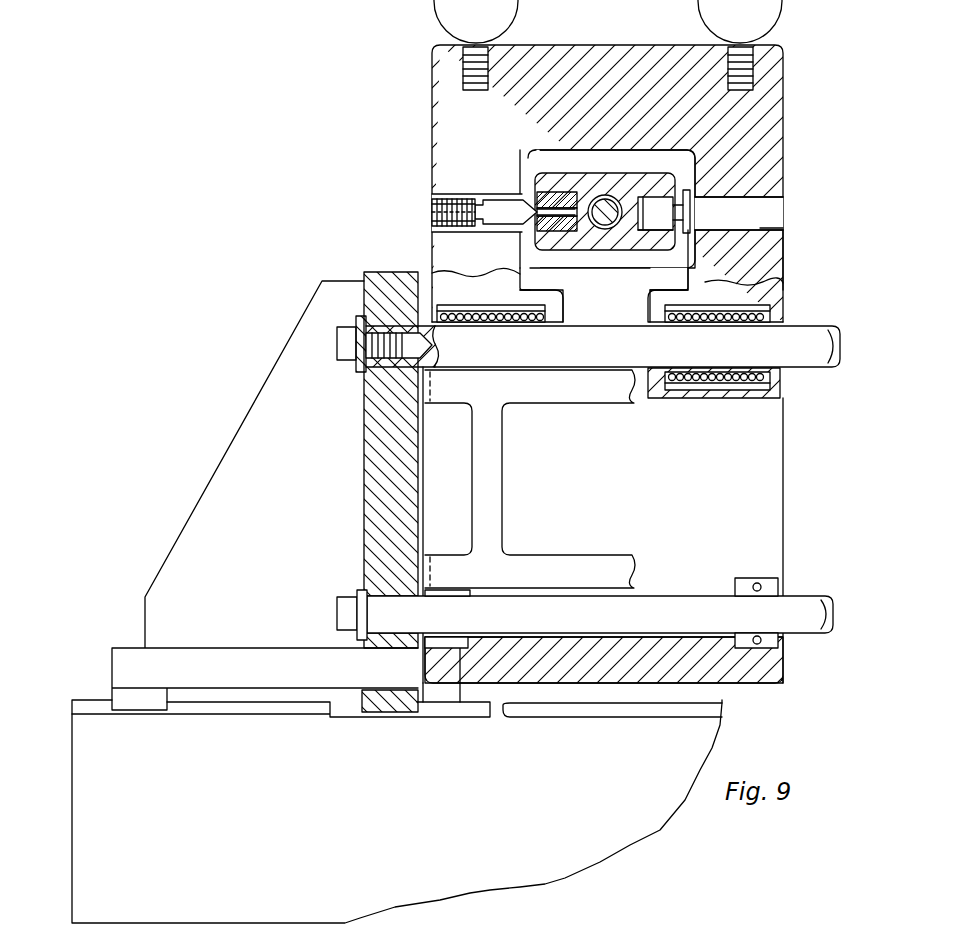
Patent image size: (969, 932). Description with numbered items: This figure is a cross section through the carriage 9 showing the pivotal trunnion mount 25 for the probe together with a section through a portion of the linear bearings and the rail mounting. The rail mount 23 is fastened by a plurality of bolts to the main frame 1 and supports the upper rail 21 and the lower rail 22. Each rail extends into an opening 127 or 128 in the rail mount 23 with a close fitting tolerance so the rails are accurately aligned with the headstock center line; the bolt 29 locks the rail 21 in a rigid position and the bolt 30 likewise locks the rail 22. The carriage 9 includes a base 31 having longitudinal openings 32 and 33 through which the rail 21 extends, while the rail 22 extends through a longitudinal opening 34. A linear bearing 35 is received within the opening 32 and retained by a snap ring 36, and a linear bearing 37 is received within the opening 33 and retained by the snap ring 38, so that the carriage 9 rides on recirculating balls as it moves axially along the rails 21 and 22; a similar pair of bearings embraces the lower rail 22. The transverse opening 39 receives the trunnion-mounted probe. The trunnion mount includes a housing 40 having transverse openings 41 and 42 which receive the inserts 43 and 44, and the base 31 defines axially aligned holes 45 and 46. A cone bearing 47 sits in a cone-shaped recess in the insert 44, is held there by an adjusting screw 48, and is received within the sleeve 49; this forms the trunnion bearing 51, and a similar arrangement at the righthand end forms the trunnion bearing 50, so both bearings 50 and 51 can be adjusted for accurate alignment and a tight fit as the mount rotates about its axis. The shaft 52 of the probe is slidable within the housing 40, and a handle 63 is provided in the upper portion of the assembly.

The main frame 1 is at (72, 774).
The carriage 9 is at (786, 85).
The upper rail 21 is at (808, 332).
The lower rail 22 is at (805, 598).
The rail mount 23 is at (268, 380).
The trunnion mount 25 is at (650, 173).
The bolt 29 is at (346, 360).
The bolt 30 is at (344, 597).
The base 31 is at (776, 248).
The longitudinal opening 32 is at (540, 322).
The longitudinal opening 33 is at (705, 347).
The longitudinal opening 34 is at (588, 589).
The linear bearing 35 is at (530, 292).
The snap ring 36 is at (497, 300).
The linear bearing 37 is at (688, 292).
The snap ring 38 is at (783, 298).
The transverse opening 39 is at (580, 150).
The housing 40 is at (690, 183).
The transverse opening 41 is at (660, 197).
The transverse opening 42 is at (547, 192).
The insert 43 is at (640, 232).
The insert 44 is at (563, 231).
The hole 45 is at (756, 200).
The hole 46 is at (497, 200).
The cone bearing 47 is at (500, 224).
The adjusting screw 48 is at (460, 228).
The sleeve 49 is at (468, 196).
The trunnion bearing 50 is at (735, 230).
The trunnion bearing 51 is at (472, 192).
The shaft of the probe 52 is at (604, 195).
The handle 63 is at (783, 22).
The opening 127 is at (393, 322).
The opening 128 is at (392, 592).